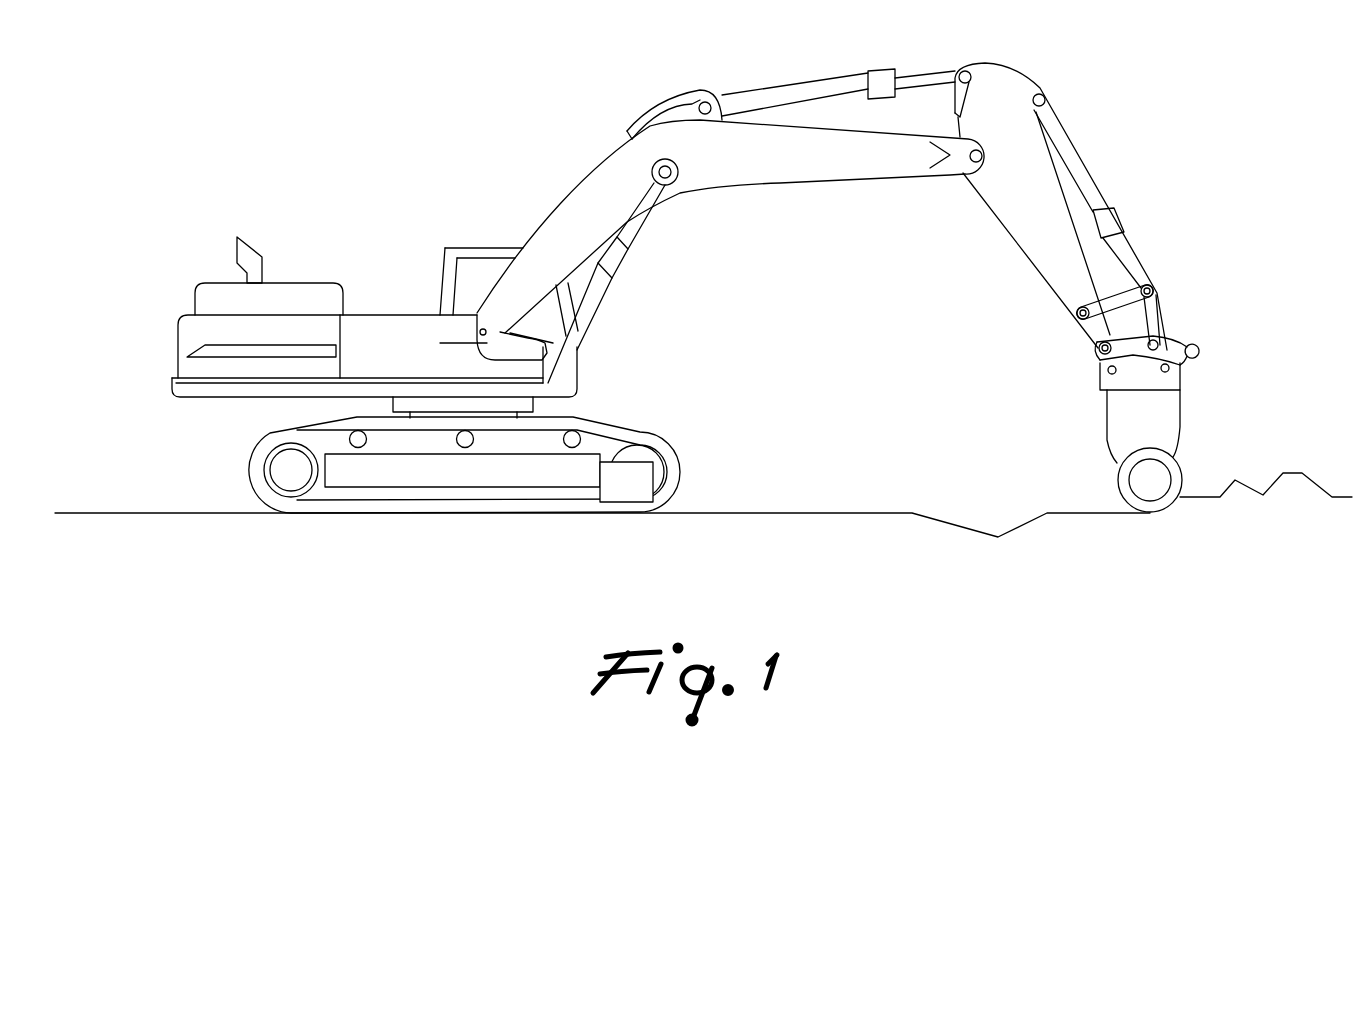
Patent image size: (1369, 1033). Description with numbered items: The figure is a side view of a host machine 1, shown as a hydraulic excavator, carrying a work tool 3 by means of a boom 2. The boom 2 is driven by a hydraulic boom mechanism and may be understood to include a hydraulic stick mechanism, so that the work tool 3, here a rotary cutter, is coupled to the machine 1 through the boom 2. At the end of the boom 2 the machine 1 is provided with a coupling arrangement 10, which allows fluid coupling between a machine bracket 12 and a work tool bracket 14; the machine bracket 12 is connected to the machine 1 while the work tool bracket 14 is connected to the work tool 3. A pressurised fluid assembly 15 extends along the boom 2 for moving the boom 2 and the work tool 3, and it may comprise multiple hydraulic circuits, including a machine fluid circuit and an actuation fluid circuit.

The host machine 1 is at (386, 327).
The boom 2 is at (826, 156).
The work tool 3 is at (1167, 430).
The coupling arrangement 10 is at (1209, 355).
The machine bracket 12 is at (1100, 358).
The work tool bracket 14 is at (1107, 377).
The pressurised fluid assembly 15 is at (1073, 155).